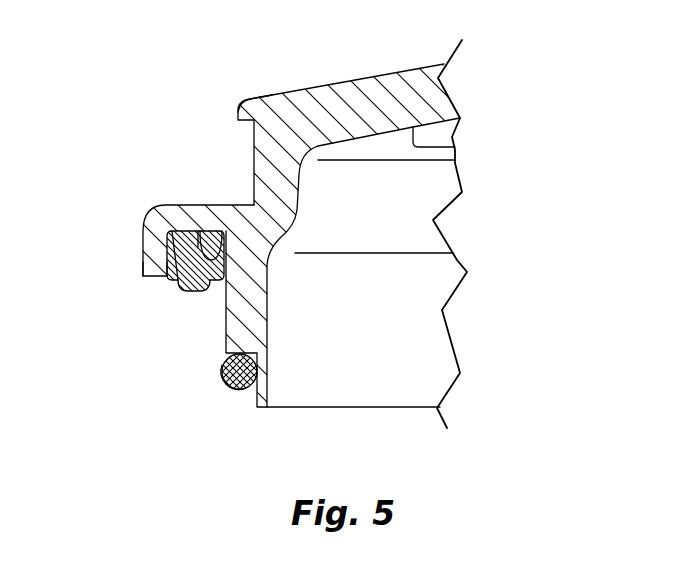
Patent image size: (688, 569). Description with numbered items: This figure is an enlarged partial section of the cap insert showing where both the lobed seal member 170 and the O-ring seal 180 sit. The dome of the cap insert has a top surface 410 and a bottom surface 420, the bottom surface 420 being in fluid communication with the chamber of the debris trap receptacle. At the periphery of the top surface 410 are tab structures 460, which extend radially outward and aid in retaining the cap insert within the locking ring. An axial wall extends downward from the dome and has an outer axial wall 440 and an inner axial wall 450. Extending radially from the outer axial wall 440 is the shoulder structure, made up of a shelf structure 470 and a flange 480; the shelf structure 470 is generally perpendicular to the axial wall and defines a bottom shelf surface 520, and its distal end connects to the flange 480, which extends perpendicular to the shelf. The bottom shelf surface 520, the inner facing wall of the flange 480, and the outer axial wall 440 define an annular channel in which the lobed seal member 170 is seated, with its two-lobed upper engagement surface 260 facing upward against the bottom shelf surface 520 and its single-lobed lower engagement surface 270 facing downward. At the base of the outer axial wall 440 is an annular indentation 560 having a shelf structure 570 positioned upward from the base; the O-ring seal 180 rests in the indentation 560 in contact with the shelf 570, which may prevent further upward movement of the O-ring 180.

The top surface 410 is at (395, 74).
The bottom surface 420 is at (455, 147).
The outer axial wall 440 is at (226, 310).
The inner axial wall 450 is at (268, 341).
The tab structures 460 is at (262, 93).
The upper engagement surface 260 is at (178, 205).
The lobed seal member 170 is at (177, 282).
The flange 480 is at (144, 232).
The bottom shelf surface 520 is at (223, 237).
The shelf structure 470 is at (190, 238).
The lower engagement surface 270 is at (210, 287).
The O-ring seal 180 is at (230, 387).
The shelf structure of annular indentation 570 is at (222, 367).
The annular indentation 560 is at (233, 390).